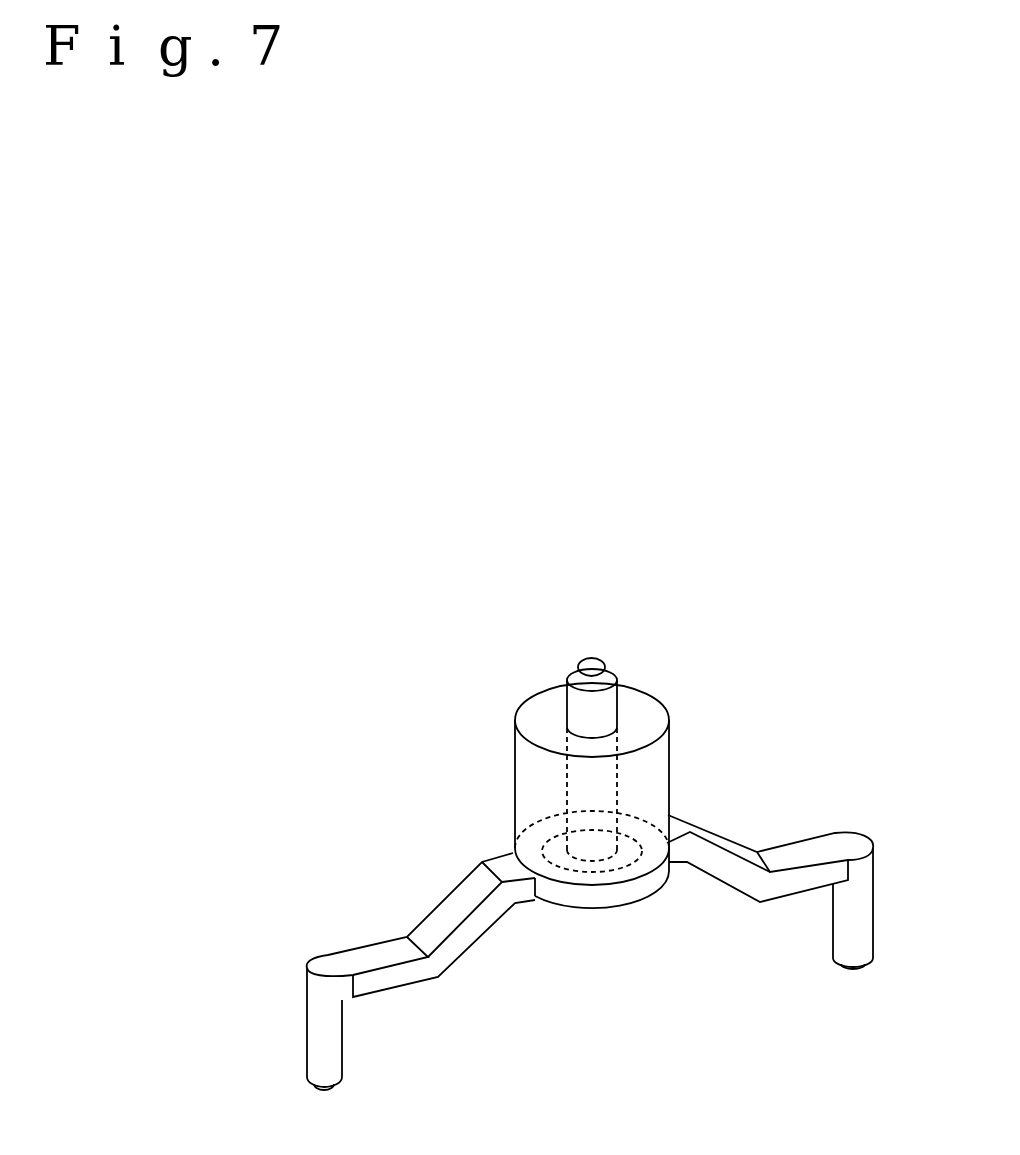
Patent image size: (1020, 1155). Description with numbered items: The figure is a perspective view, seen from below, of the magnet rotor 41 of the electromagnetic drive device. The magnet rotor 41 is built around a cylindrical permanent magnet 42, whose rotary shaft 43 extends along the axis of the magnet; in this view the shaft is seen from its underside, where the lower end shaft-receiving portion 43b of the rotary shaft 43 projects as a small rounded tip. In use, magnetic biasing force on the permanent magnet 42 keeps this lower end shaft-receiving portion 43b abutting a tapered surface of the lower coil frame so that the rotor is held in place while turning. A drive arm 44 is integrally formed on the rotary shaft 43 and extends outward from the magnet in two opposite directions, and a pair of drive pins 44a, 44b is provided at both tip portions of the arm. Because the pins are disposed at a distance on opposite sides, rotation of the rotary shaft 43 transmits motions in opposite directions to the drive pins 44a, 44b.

The magnet rotor 41 is at (778, 634).
The cylindrical permanent magnet 42 is at (657, 767).
The rotary shaft 43 is at (607, 712).
The lower end shaft-receiving portion 43b is at (593, 663).
The drive arm 44 is at (722, 870).
The drive pin 44a is at (845, 940).
The drive pin 44b is at (327, 1048).